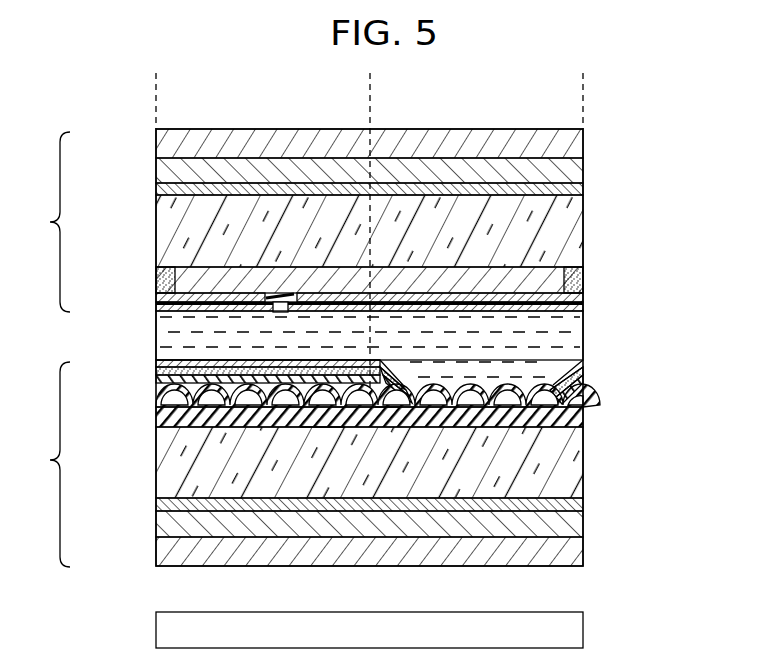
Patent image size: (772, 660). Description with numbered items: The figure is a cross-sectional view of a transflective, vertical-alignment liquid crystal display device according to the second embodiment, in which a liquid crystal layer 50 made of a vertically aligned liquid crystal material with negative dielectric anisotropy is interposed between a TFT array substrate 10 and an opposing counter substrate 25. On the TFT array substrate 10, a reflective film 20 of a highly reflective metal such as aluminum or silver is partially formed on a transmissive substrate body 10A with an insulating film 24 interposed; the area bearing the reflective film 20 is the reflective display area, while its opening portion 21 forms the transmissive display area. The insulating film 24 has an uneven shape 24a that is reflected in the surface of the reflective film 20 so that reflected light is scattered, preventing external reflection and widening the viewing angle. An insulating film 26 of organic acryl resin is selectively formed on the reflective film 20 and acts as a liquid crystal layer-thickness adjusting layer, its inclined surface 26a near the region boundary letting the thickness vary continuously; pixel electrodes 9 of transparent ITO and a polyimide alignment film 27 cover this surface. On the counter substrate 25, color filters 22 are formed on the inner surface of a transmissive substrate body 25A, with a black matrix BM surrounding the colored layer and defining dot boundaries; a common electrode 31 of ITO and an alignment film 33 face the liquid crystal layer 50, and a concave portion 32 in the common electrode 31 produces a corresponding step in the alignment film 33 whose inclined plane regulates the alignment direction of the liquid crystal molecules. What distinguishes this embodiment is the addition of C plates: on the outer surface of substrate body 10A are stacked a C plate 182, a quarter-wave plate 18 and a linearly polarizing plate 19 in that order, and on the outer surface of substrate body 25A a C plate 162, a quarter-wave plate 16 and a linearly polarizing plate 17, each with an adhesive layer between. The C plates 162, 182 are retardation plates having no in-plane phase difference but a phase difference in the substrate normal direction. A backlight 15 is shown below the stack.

The linearly polarizing plate 17 is at (563, 146).
The quarter-wave plate 16 is at (575, 172).
The C plate 162 is at (575, 190).
The substrate body 25A is at (565, 217).
The color filters 22 is at (580, 276).
The black matrix BM is at (157, 284).
The common electrode 31 is at (575, 298).
The alignment film 33 is at (580, 309).
The concave portion 32 is at (287, 300).
The liquid crystal layer 50 is at (572, 343).
The pixel electrodes 9 is at (578, 370).
The inclined surface 26a is at (583, 383).
The insulating film 26 is at (583, 394).
The reflective film 20 is at (157, 398).
The uneven shape 24a is at (160, 425).
The substrate body 10A is at (568, 467).
The C plate 182 is at (578, 503).
The quarter-wave plate 18 is at (568, 521).
The linearly polarizing plate 19 is at (578, 548).
The backlight 15 is at (590, 632).
The counter substrate 25 is at (39, 222).
The TFT array substrate 10 is at (40, 464).
The alignment film 27 is at (157, 363).
The insulating film 24 is at (322, 427).
The opening portion 21 is at (383, 415).